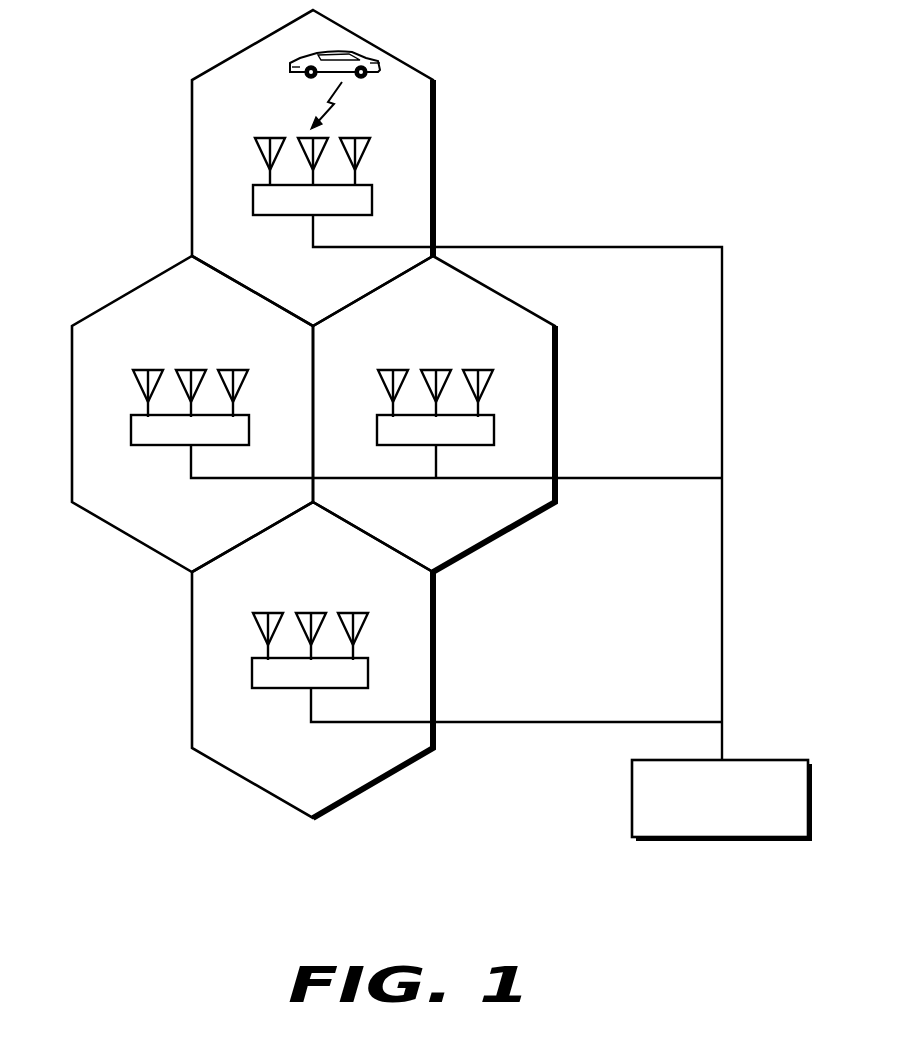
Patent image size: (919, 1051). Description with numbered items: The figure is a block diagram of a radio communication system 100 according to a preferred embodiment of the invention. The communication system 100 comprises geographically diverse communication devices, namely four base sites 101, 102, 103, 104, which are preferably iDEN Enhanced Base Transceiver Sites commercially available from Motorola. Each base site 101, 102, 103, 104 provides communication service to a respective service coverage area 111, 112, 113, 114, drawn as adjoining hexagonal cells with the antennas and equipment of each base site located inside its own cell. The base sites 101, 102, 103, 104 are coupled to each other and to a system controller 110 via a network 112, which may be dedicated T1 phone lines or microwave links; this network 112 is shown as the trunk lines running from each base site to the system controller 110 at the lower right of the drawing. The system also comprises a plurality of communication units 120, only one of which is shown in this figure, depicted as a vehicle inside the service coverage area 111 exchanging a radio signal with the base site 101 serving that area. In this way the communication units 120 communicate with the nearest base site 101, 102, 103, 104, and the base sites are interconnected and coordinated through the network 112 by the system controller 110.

The communication system 100 is at (102, 824).
The base site 101 is at (373, 200).
The base site 102 is at (250, 430).
The base site 103 is at (495, 430).
The base site 104 is at (368, 672).
The system controller 110 is at (813, 772).
The service coverage area 111 is at (257, 57).
The network 112 is at (115, 313).
The service coverage area 113 is at (517, 315).
The service coverage area 114 is at (235, 752).
The communication unit 120 is at (367, 53).